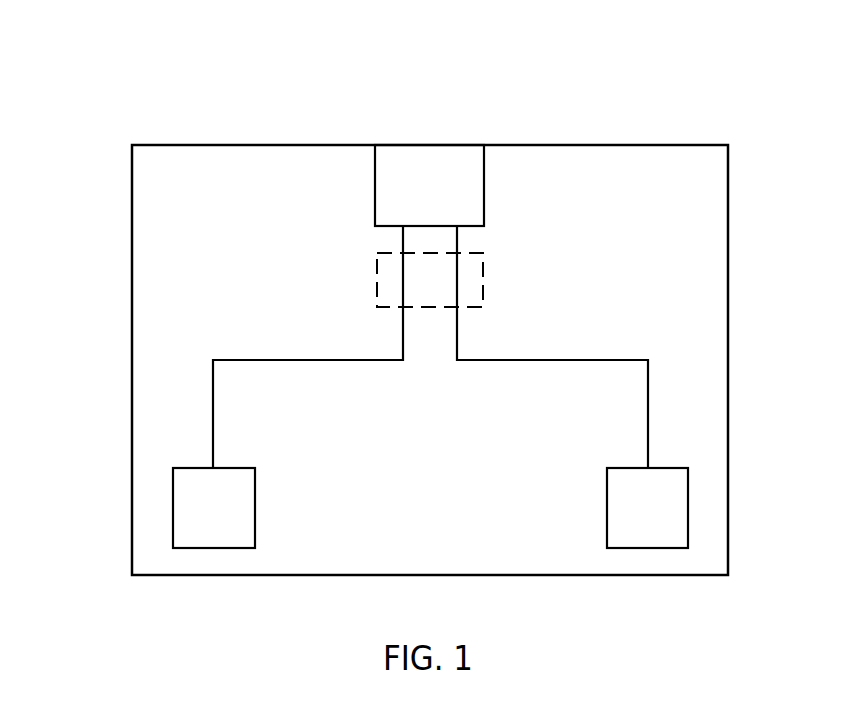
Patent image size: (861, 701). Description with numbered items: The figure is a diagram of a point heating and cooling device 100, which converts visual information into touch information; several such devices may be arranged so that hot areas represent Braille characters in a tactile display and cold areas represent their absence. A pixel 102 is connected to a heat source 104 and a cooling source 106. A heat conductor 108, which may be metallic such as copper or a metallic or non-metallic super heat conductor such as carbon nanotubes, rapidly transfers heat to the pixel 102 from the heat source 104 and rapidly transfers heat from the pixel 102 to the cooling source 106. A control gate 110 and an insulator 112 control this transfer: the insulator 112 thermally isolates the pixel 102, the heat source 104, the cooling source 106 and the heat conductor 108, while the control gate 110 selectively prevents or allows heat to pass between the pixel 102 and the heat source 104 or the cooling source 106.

The point heating and cooling device 100 is at (96, 74).
The pixel 102 is at (412, 195).
The heat source 104 is at (196, 518).
The cooling source 106 is at (630, 518).
The heat conductor 108 is at (213, 415).
The control gate 110 is at (487, 264).
The insulator 112 is at (692, 182).